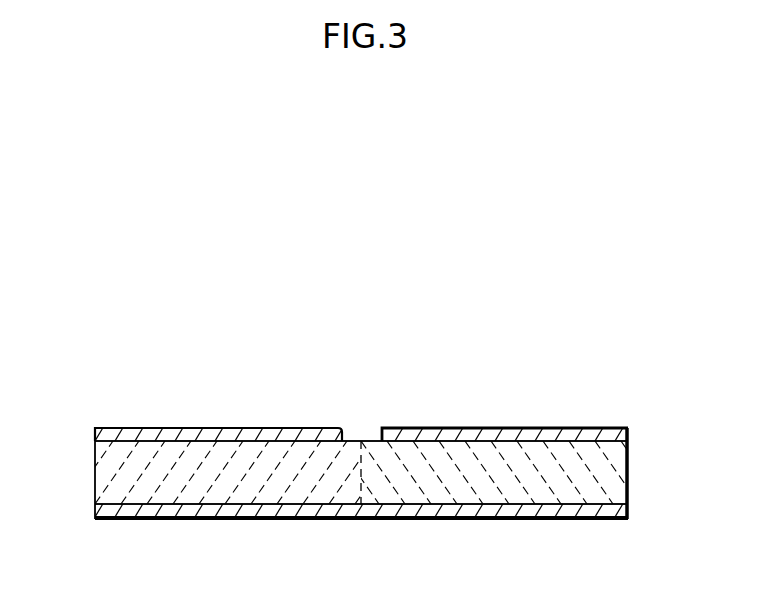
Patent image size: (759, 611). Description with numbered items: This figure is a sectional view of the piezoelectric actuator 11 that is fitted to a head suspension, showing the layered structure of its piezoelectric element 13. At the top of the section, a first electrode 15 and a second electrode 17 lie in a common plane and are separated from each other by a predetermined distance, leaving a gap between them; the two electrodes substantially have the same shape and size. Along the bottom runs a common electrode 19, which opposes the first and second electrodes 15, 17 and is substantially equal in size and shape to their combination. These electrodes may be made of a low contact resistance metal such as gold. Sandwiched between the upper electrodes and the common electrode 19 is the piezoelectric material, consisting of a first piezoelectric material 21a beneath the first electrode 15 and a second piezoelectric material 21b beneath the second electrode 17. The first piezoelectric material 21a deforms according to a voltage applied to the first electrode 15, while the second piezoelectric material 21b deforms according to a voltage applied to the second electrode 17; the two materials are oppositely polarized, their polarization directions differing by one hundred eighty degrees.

The piezoelectric actuator 11 is at (561, 296).
The piezoelectric element 13 is at (453, 400).
The first electrode 15 is at (288, 436).
The second electrode 17 is at (568, 430).
The common electrode 19 is at (397, 508).
The first piezoelectric material 21a is at (103, 472).
The second piezoelectric material 21b is at (622, 462).